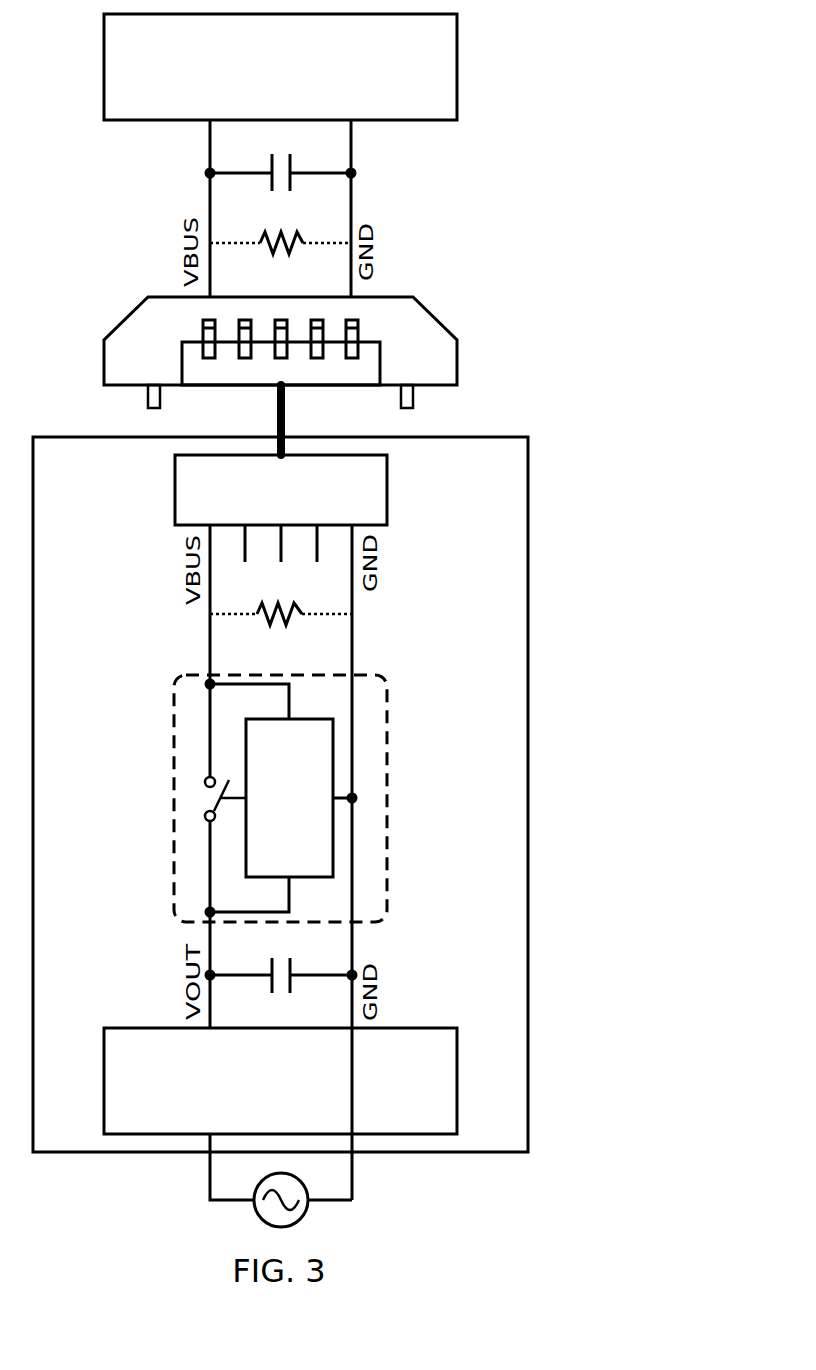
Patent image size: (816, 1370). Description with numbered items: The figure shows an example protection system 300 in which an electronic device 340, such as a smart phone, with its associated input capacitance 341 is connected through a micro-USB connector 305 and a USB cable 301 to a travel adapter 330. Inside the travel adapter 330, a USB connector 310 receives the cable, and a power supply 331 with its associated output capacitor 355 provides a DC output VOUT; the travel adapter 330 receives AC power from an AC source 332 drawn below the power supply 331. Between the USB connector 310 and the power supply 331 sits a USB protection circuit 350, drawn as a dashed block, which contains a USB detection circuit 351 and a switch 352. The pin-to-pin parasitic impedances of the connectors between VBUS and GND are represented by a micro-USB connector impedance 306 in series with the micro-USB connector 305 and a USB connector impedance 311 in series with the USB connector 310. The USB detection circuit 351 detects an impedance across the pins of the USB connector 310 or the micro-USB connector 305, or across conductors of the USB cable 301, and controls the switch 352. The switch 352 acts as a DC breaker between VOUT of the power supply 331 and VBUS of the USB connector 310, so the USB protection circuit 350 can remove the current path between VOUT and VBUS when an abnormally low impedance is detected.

The protection system 300 is at (570, 155).
The electronic device 340 is at (457, 50).
The input capacitance 341 is at (292, 160).
The micro-USB connector impedance 306 is at (261, 246).
The micro-USB connector 305 is at (457, 350).
The USB cable 301 is at (286, 416).
The travel adapter 330 is at (528, 472).
The USB connector 310 is at (387, 490).
The USB connector impedance 311 is at (300, 612).
The USB protection circuit 350 is at (387, 710).
The USB detection circuit 351 is at (283, 880).
The switch 352 is at (204, 816).
The output capacitor 355 is at (292, 965).
The power supply 331 is at (457, 1062).
The AC source 332 is at (257, 1214).